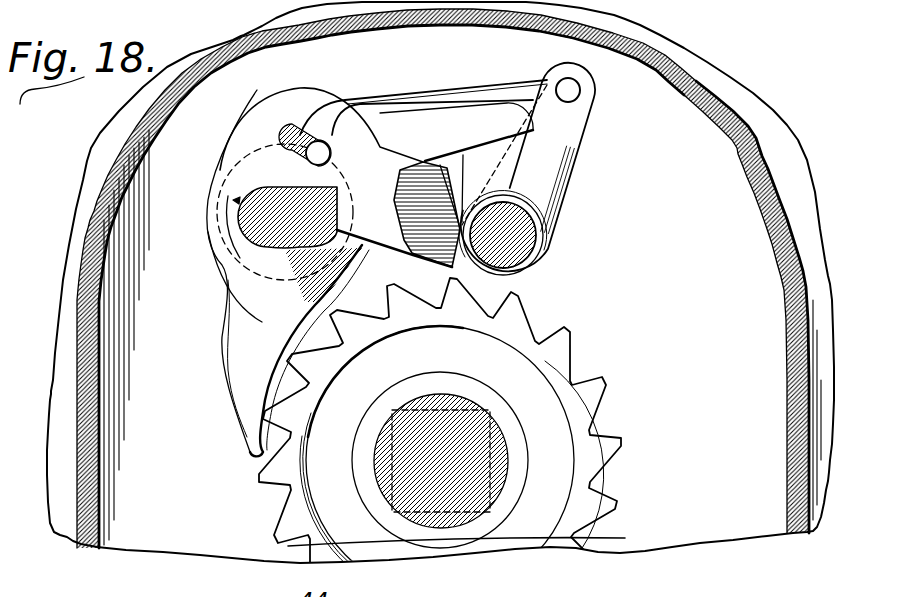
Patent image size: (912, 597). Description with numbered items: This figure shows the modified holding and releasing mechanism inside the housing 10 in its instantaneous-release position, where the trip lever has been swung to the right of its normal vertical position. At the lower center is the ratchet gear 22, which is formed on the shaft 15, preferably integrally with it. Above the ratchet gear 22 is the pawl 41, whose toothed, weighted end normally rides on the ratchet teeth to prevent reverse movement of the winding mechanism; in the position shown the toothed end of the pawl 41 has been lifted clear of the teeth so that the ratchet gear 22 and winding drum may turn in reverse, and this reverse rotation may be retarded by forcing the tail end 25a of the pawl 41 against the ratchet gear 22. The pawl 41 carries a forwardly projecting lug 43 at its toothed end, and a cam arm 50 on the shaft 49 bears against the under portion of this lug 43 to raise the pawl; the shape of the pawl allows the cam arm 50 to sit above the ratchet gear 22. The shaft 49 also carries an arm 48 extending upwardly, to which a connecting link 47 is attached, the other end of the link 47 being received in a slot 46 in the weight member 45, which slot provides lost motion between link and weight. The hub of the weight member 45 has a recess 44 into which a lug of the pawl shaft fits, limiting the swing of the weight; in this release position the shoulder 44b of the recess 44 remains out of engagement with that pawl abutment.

The housing 10 is at (73, 535).
The shaft 15 is at (450, 513).
The ratchet gear 22 is at (594, 390).
The tail end of the pawl 25a is at (250, 450).
The pawl 41 is at (367, 237).
The forwardly projecting lug 43 is at (537, 130).
The recess 44 is at (222, 223).
The shoulder 44b is at (233, 200).
The weight member 45 is at (257, 90).
The slot 46 is at (307, 130).
The connecting link 47 is at (421, 103).
The arm 48 is at (567, 185).
The shaft 49 is at (528, 243).
The cam arm 50 is at (475, 173).